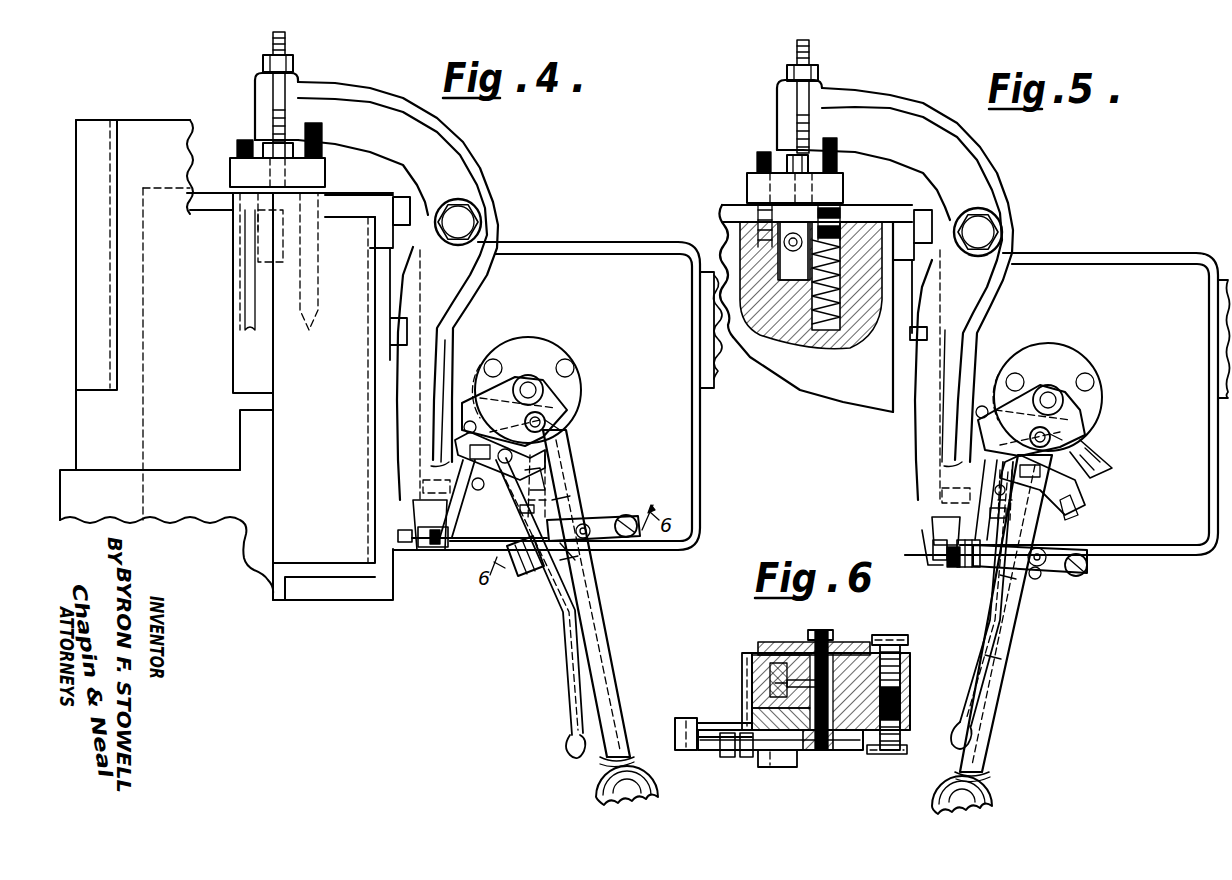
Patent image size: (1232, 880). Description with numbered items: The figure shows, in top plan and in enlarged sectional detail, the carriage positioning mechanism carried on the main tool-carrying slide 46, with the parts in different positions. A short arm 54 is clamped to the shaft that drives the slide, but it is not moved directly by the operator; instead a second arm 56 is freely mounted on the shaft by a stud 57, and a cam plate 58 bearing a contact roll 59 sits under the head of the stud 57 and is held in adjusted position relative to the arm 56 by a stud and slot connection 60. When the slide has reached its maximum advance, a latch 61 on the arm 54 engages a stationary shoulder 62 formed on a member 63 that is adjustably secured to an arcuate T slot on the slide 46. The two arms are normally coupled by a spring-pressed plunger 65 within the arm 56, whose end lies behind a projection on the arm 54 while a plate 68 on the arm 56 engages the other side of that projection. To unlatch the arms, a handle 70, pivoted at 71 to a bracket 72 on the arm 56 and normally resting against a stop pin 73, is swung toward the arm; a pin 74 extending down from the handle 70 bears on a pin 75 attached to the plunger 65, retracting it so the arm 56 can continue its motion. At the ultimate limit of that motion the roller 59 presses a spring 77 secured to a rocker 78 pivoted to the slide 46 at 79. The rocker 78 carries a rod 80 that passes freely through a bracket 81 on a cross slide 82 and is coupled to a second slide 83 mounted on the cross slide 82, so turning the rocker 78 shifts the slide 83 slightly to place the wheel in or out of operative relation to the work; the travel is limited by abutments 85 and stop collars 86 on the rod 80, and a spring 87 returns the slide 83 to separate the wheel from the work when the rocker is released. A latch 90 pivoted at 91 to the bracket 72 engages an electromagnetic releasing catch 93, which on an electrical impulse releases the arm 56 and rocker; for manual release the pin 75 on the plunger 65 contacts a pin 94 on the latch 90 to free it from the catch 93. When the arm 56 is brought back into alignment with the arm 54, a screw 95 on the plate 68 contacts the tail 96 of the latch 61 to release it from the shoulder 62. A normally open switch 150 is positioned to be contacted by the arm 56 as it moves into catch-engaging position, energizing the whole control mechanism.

In FIG. 4, the slide 46 is at (690, 470).
In FIG. 5, the slide 46 is at (1175, 557).
In FIG. 5, the short arm 54 is at (1098, 455).
In FIG. 4, the second arm 56 is at (605, 651).
In FIG. 5, the second arm 56 is at (1007, 686).
In FIG. 6, the second arm 56 is at (748, 653).
In FIG. 4, the stud 57 is at (545, 392).
In FIG. 5, the stud 57 is at (1052, 386).
In FIG. 4, the cam plate 58 is at (512, 378).
In FIG. 5, the cam plate 58 is at (1030, 370).
In FIG. 4, the contact roll 59 is at (468, 383).
In FIG. 5, the contact roll 59 is at (990, 395).
In FIG. 4, the stud and slot connection 60 is at (556, 424).
In FIG. 5, the stud and slot connection 60 is at (1068, 425).
In FIG. 4, the latch 61 is at (482, 508).
In FIG. 5, the latch 61 is at (1103, 518).
In FIG. 6, the latch 61 is at (715, 752).
In FIG. 4, the stationary shoulder 62 is at (496, 472).
In FIG. 4, the member 63 is at (514, 411).
In FIG. 5, the member 63 is at (1030, 420).
In FIG. 4, the plunger 65 is at (593, 611).
In FIG. 5, the plunger 65 is at (1005, 642).
In FIG. 6, the plunger 65 is at (768, 642).
In FIG. 4, the plate 68 is at (530, 520).
In FIG. 5, the plate 68 is at (968, 568).
In FIG. 6, the plate 68 is at (740, 676).
In FIG. 4, the handle 70 is at (580, 744).
In FIG. 5, the handle 70 is at (930, 752).
In FIG. 6, the handle 70 is at (780, 642).
In FIG. 5, the pivot 71 is at (1080, 577).
In FIG. 6, the pivot 71 is at (908, 642).
In FIG. 6, the bracket 72 is at (872, 652).
In FIG. 4, the stop pin 73 is at (588, 499).
In FIG. 5, the stop pin 73 is at (1052, 537).
In FIG. 6, the pin 74 is at (828, 640).
In FIG. 6, the pin 75 is at (812, 630).
In FIG. 4, the spring 77 is at (470, 370).
In FIG. 5, the spring 77 is at (950, 445).
In FIG. 4, the rocker 78 is at (474, 146).
In FIG. 5, the rocker 78 is at (984, 151).
In FIG. 4, the pivot 79 is at (466, 220).
In FIG. 5, the pivot 79 is at (985, 232).
In FIG. 4, the rod 80 is at (286, 39).
In FIG. 5, the rod 80 is at (793, 52).
In FIG. 4, the bracket 81 is at (232, 168).
In FIG. 5, the bracket 81 is at (748, 182).
In FIG. 4, the cross slide 82 is at (350, 577).
In FIG. 4, the second slide 83 is at (270, 596).
In FIG. 5, the second slide 83 is at (850, 408).
In FIG. 4, the abutments 85 is at (244, 187).
In FIG. 5, the abutments 85 is at (742, 207).
In FIG. 4, the stop collars 86 is at (303, 140).
In FIG. 5, the stop collars 86 is at (785, 162).
In FIG. 5, the spring 87 is at (855, 230).
In FIG. 4, the latch 90 is at (520, 570).
In FIG. 5, the latch 90 is at (935, 578).
In FIG. 6, the latch 90 is at (690, 718).
In FIG. 6, the pivot 91 is at (882, 756).
In FIG. 4, the electromagnetic releasing catch 93 is at (423, 549).
In FIG. 5, the electromagnetic releasing catch 93 is at (932, 543).
In FIG. 6, the pin 94 is at (840, 752).
In FIG. 5, the screw 95 is at (985, 520).
In FIG. 6, the screw 95 is at (732, 758).
In FIG. 6, the tail 96 is at (775, 768).
In FIG. 4, the fifth switch 150 is at (398, 533).
In FIG. 5, the fifth switch 150 is at (945, 565).